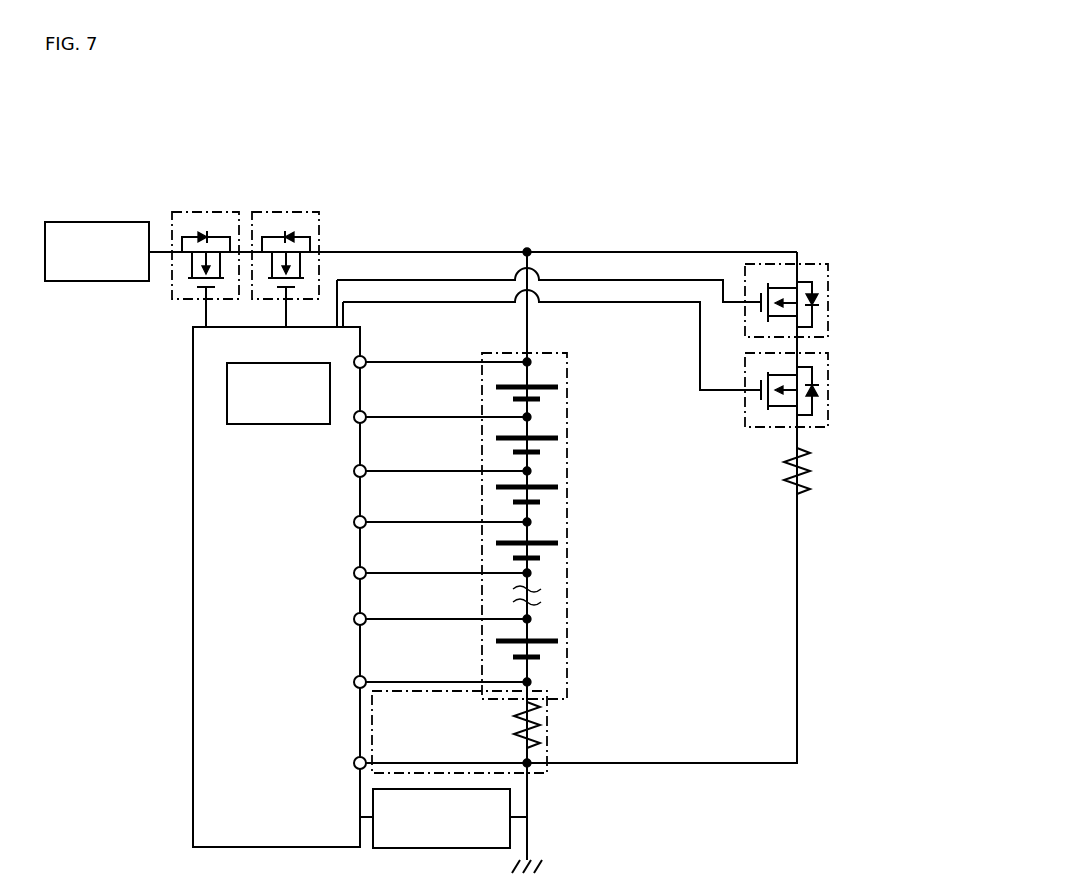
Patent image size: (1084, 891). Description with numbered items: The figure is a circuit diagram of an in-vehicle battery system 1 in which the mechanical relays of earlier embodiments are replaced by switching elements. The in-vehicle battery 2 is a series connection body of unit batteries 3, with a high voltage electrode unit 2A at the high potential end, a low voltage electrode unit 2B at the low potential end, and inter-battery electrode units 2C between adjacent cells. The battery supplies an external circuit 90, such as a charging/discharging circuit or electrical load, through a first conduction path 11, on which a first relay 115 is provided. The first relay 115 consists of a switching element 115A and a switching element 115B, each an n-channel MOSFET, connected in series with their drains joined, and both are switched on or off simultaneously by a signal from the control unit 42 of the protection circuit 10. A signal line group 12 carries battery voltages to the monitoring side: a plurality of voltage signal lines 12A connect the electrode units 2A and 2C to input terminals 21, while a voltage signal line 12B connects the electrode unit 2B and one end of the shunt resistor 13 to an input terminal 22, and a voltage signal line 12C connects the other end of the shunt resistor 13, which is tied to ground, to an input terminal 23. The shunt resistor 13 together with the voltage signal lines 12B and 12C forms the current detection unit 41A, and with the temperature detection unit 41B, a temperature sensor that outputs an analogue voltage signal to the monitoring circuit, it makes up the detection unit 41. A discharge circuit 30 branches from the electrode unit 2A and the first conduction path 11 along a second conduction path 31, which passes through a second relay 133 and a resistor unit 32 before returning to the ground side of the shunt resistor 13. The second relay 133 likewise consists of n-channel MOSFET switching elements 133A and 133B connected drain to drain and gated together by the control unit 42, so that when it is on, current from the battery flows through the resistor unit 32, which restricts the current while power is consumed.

The in-vehicle battery system 1 is at (739, 134).
The in-vehicle battery 2 is at (568, 558).
The high voltage electrode unit 2A is at (530, 383).
The low voltage electrode unit 2B is at (531, 660).
The inter-battery electrode unit 2C is at (529, 432).
The unit battery 3 is at (559, 378).
The protection circuit 10 is at (497, 217).
The first conduction path 11 is at (370, 250).
The signal line group 12 is at (420, 380).
The voltage signal line 12A is at (444, 365).
The voltage signal line 12B is at (433, 685).
The voltage signal line 12C is at (462, 762).
The shunt resistor 13 is at (541, 725).
The input terminal 21 is at (354, 360).
The input terminal 22 is at (355, 686).
The input terminal 23 is at (355, 763).
The discharge circuit 30 is at (791, 201).
The second conduction path 31 is at (670, 250).
The resistor unit 32 is at (808, 460).
The detection unit 41 is at (680, 780).
The current detection unit 41A is at (548, 750).
The temperature detection unit 41B is at (529, 814).
The control unit 42 is at (227, 394).
The external circuit 90 is at (99, 222).
The first relay 115 is at (259, 128).
The switching element 115A is at (206, 212).
The switching element 115B is at (286, 212).
The second relay 133 is at (874, 336).
The switching element 133A is at (830, 290).
The switching element 133B is at (830, 390).